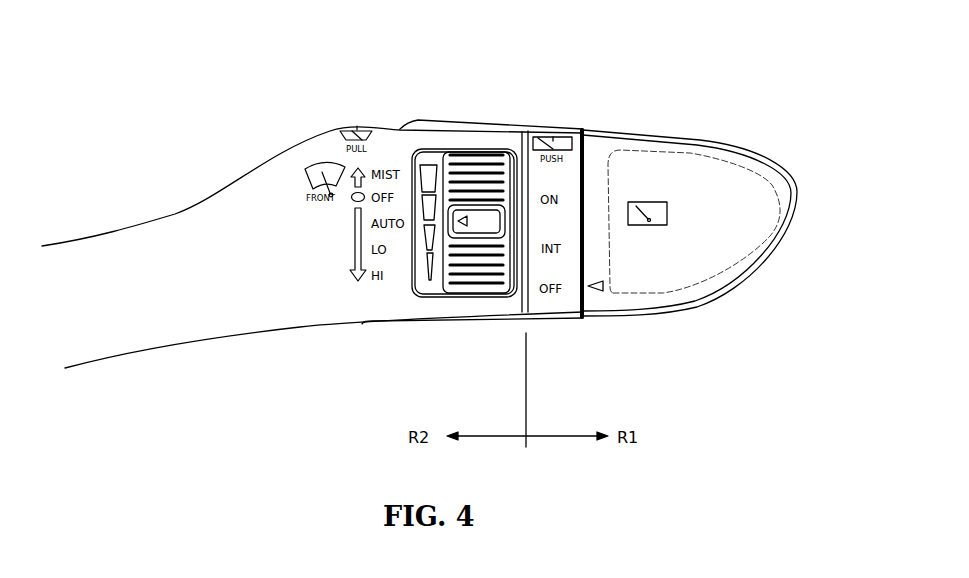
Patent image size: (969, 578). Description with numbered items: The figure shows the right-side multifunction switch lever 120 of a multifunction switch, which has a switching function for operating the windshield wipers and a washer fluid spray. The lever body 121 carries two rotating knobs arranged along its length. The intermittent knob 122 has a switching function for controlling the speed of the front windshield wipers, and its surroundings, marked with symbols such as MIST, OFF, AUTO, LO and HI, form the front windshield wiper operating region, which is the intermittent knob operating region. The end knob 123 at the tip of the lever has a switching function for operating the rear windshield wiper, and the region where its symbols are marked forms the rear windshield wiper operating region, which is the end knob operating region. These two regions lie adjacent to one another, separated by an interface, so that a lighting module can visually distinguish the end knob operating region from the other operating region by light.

The right-side multifunction switch lever 120 is at (652, 131).
The lever body 121 is at (246, 314).
The intermittent knob 122 is at (472, 272).
The end knob 123 is at (685, 280).